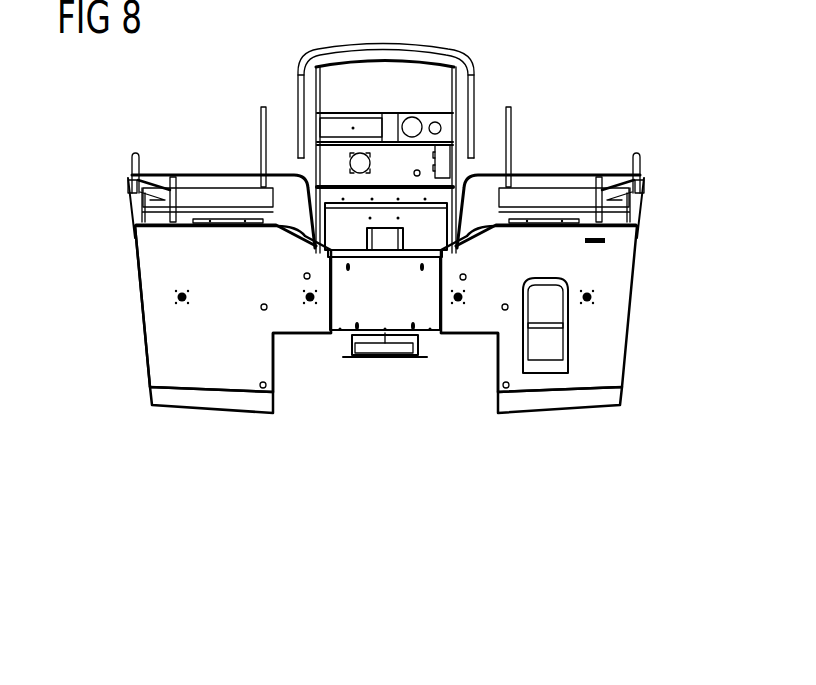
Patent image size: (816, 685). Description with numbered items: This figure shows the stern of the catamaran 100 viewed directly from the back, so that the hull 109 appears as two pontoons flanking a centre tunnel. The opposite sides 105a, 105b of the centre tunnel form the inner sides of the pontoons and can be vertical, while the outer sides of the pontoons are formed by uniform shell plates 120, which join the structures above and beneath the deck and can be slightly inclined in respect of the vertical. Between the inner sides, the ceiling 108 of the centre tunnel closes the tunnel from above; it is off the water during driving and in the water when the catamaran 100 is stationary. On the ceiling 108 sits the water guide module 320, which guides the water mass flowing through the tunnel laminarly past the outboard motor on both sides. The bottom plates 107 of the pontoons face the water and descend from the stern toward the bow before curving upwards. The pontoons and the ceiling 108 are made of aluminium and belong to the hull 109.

The catamaran 100 is at (374, 288).
The opposite side of the centre tunnel 105a is at (495, 371).
The opposite side of the centre tunnel 105b is at (278, 371).
The bottom plate 107 is at (210, 400).
The ceiling of the centre tunnel 108 is at (462, 333).
The hull 109 is at (120, 369).
The shell plate 120 is at (137, 303).
The water guide module 320 is at (370, 357).